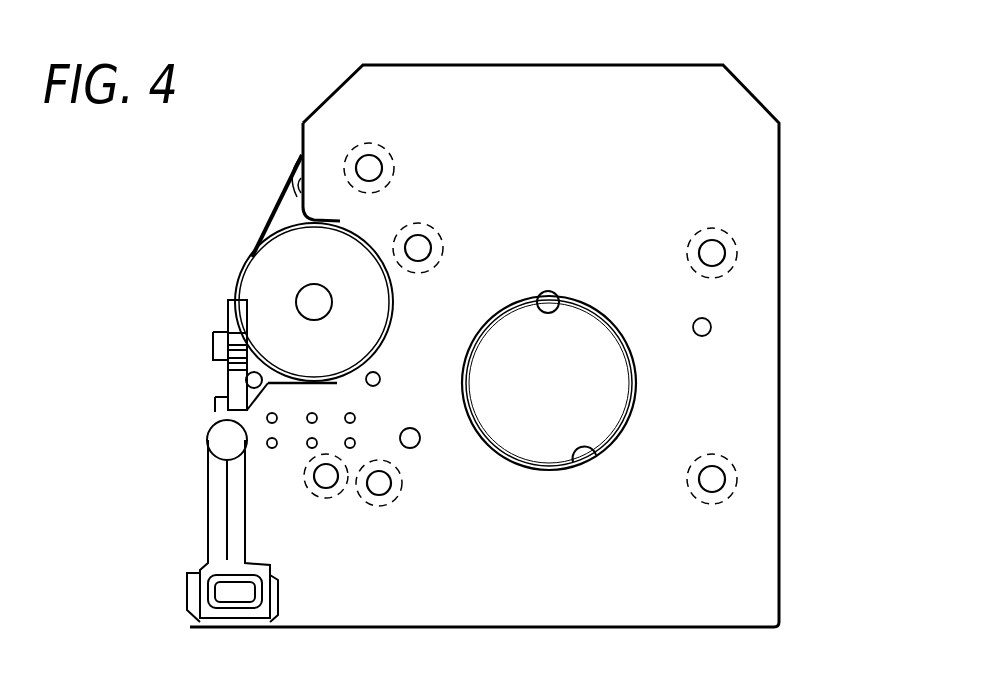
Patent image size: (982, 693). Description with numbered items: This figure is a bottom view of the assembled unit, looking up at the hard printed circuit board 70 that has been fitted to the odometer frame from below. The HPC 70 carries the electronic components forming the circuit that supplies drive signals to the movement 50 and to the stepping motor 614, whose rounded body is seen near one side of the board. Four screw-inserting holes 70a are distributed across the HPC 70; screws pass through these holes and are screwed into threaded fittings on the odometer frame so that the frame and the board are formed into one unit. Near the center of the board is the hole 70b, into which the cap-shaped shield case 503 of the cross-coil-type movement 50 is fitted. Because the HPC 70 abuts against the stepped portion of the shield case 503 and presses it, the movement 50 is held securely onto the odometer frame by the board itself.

The hard printed circuit board 70 is at (735, 165).
The screw-inserting holes 70a is at (418, 243).
The hole 70b is at (598, 455).
The cross-coil-type movement 50 is at (633, 407).
The shield case 503 is at (610, 363).
The stepping motor 614 is at (287, 247).